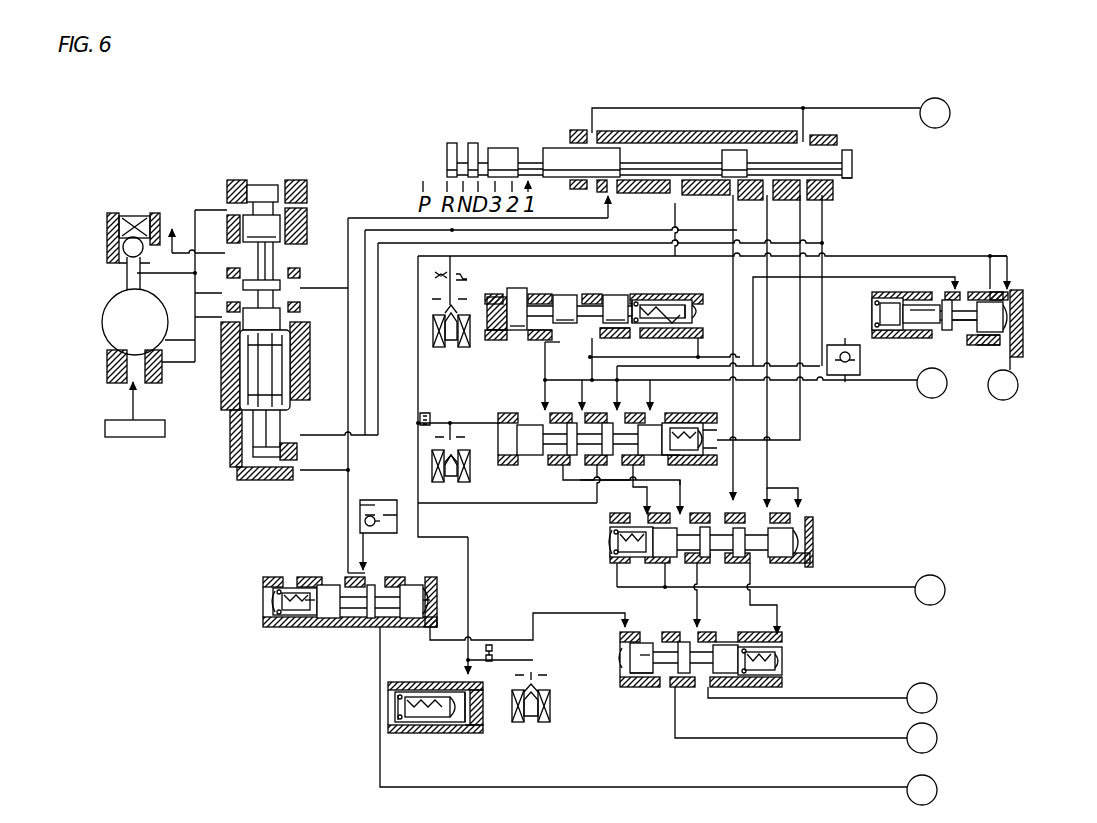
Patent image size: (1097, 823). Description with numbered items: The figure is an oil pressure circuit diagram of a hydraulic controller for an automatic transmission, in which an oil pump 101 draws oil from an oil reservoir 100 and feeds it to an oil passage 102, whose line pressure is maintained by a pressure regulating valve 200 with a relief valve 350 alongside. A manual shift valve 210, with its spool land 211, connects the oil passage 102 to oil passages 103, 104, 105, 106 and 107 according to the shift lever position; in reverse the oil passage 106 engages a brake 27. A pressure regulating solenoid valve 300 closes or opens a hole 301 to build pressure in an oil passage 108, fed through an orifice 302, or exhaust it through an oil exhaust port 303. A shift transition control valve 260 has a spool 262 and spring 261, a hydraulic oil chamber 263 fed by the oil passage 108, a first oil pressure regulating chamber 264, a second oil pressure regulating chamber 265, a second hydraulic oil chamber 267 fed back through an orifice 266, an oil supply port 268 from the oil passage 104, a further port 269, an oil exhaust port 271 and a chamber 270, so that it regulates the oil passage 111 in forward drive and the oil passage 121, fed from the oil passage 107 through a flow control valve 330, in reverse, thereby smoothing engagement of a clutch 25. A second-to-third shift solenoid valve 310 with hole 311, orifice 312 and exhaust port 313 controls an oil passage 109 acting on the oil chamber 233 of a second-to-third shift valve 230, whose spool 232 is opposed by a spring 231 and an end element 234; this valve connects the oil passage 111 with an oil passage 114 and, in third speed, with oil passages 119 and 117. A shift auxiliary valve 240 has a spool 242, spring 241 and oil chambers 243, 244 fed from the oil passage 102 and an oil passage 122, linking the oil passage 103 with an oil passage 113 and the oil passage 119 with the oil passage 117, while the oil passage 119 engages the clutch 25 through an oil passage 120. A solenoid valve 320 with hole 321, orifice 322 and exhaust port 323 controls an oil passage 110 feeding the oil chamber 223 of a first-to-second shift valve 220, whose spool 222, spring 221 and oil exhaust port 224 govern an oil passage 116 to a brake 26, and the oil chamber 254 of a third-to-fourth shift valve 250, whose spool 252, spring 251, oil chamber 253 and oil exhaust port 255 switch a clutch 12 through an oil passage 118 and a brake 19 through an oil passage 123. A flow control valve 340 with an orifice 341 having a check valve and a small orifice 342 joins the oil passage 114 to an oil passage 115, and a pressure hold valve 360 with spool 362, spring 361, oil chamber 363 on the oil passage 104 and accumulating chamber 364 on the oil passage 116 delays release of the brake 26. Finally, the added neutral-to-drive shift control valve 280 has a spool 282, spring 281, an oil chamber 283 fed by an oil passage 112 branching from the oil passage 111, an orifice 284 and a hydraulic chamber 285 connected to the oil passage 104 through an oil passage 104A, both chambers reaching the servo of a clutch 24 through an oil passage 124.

The oil reservoir 100 is at (128, 437).
The oil pump 101 is at (107, 348).
The relief valve 350 is at (110, 258).
The pressure regulating valve 200 is at (278, 180).
The oil passage 102 is at (733, 417).
The oil passage 104 is at (675, 250).
The oil passage 104A is at (976, 264).
The oil passage 112 is at (870, 277).
The oil passage 106 is at (824, 108).
The brake 27 is at (935, 113).
The oil passage 111 is at (592, 389).
The oil passage 121 is at (858, 395).
The clutch 25 is at (931, 486).
The oil passage 103 is at (803, 322).
The first oil pressure regulating chamber 264 is at (591, 352).
The oil passage 107 is at (820, 293).
The oil passage 105 is at (820, 315).
The manual shift valve 210 is at (852, 178).
The shift valve spool land 211 is at (848, 188).
The pressure regulating solenoid valve 300 is at (453, 350).
The hole 301 is at (445, 298).
The orifice 302 is at (435, 272).
The oil exhaust port 303 is at (445, 309).
The oil passage 108 is at (481, 275).
The shift transition control valve 260 is at (694, 295).
The oil exhaust port 271 is at (516, 290).
The valve land 269 is at (567, 292).
The oil supply port 268 is at (605, 292).
The spring 261 is at (638, 294).
The spool 262 is at (621, 342).
The orifice 266 is at (655, 340).
The hydraulic oil chamber 263 is at (496, 340).
The second oil pressure regulating chamber 265 is at (540, 340).
The valve chamber 270 is at (545, 380).
The second hydraulic oil chamber 267 is at (708, 310).
The 2-3 shift valve 230 is at (667, 421).
The spring 231 is at (670, 457).
The spring 234 is at (711, 457).
The oil chamber 233 is at (545, 479).
The spool 232 is at (585, 487).
The hole 311 is at (457, 436).
The oil exhaust port 313 is at (459, 458).
The 2-3 speed shift solenoid valve 310 is at (434, 480).
The orifice 312 is at (442, 407).
The oil passage 109 is at (453, 420).
The oil passage 114 is at (480, 508).
The oil passage 122 is at (639, 493).
The oil passage 119 is at (680, 490).
The 2-3 shift auxiliary valve 240 is at (803, 550).
The oil chamber 243 is at (813, 524).
The spring 241 is at (613, 533).
The oil chamber 244 is at (613, 551).
The spool 242 is at (622, 565).
The oil passage 120 is at (809, 587).
The oil passage 117 is at (702, 608).
The oil passage 113 is at (779, 617).
The 1-2 shift valve 220 is at (445, 582).
The oil exhaust port 224 is at (403, 575).
The oil chamber 223 is at (438, 615).
The spring 221 is at (286, 624).
The spool 222 is at (316, 624).
The oil passage 115 is at (366, 552).
The flow control valve 340 is at (358, 500).
The orifice with check valve 341 is at (360, 512).
The small orifice 342 is at (370, 525).
The oil passage 116 is at (834, 787).
The brake 26 is at (922, 790).
The oil passage 110 is at (533, 613).
The 3-4 shift valve 250 is at (783, 669).
The oil exhaust port 255 is at (725, 635).
The oil chamber 253 is at (785, 651).
The spring 251 is at (778, 675).
The oil chamber 254 is at (635, 680).
The spool 252 is at (641, 685).
The oil passage 118 is at (839, 698).
The clutch 12 is at (922, 698).
The oil passage 123 is at (839, 738).
The brake 19 is at (922, 738).
The pressure hold valve 360 is at (432, 736).
The spring 361 is at (400, 695).
The oil chamber 363 is at (468, 696).
The oil pressure accumulating chamber 364 is at (401, 730).
The spool 362 is at (470, 730).
The 1-2 speed shift and 3-4 speed shift solenoid valve 320 is at (516, 725).
The hole 321 is at (531, 672).
The exhaust port 323 is at (538, 682).
The orifice 322 is at (491, 652).
The N-D shift control valve 280 is at (1016, 306).
The spring 281 is at (875, 335).
The spool 282 is at (916, 325).
The oil chamber 283 is at (956, 335).
The orifice 284 is at (1013, 263).
The hydraulic chamber 285 is at (1014, 329).
The oil passage 124 is at (1014, 363).
The clutch 24 is at (1003, 385).
The flow control valve 330 is at (857, 365).